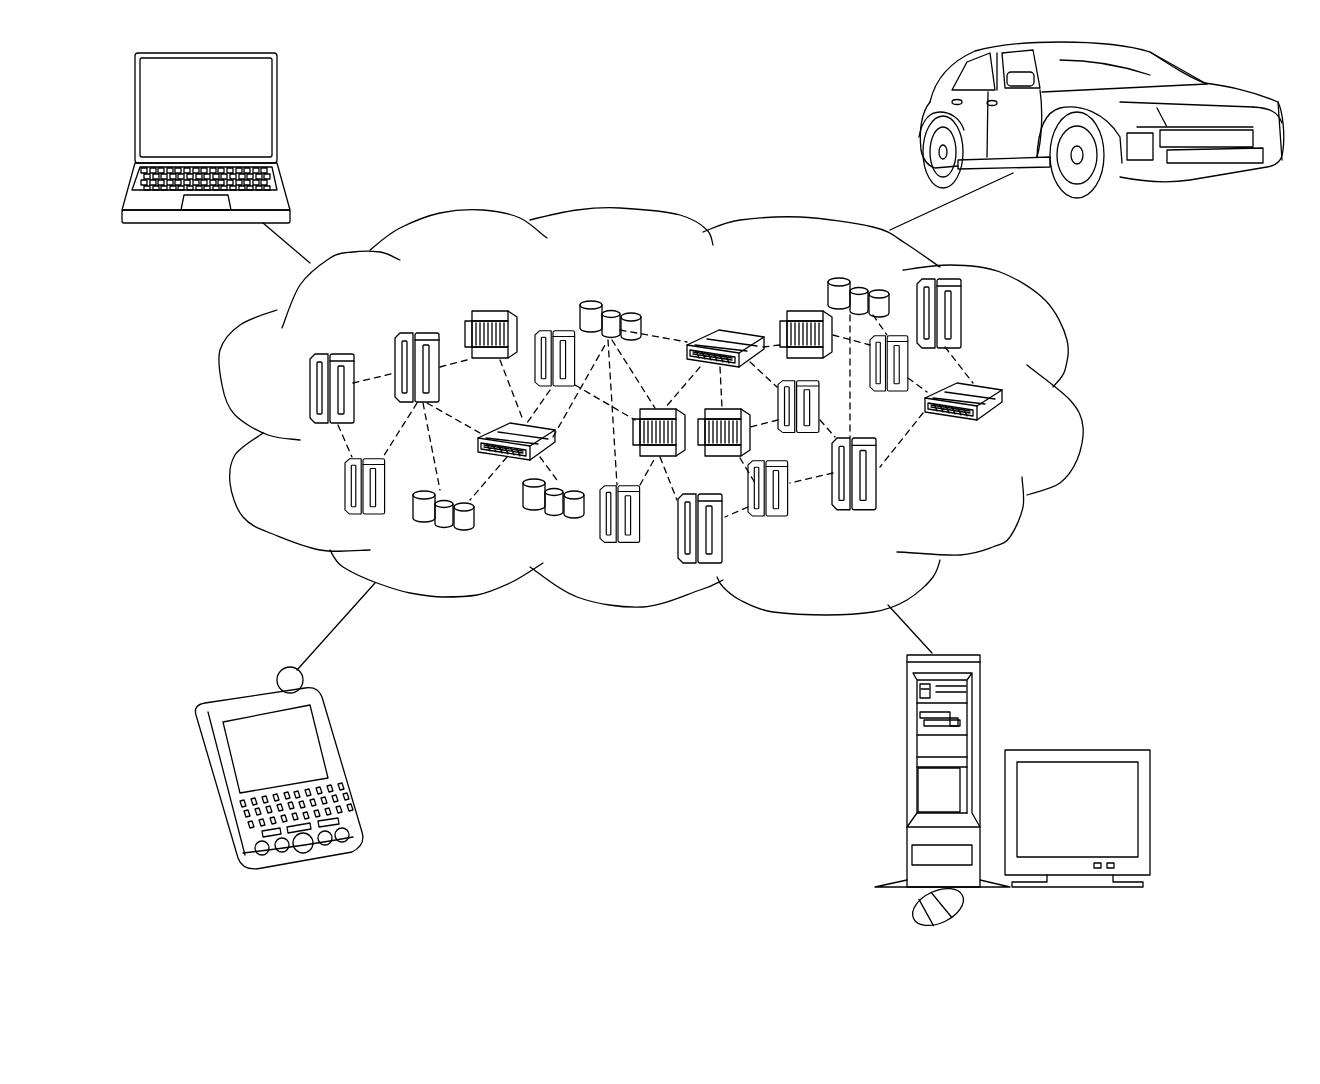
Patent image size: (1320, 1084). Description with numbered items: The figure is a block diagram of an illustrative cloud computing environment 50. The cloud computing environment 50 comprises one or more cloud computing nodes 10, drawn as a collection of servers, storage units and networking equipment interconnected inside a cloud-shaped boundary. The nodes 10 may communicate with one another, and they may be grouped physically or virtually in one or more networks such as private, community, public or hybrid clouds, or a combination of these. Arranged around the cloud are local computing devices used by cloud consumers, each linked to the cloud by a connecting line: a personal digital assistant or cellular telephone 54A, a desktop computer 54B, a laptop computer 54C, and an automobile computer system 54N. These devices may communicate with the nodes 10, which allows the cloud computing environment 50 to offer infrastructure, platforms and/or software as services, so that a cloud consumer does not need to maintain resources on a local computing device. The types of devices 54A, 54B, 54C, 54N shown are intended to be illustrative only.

The cloud computing nodes 10 is at (985, 505).
The cloud computing environment 50 is at (1073, 400).
The personal digital assistant (PDA) or cellular telephone 54A is at (332, 730).
The desktop computer 54B is at (907, 716).
The laptop computer 54C is at (277, 92).
The automobile computer system 54N is at (920, 108).